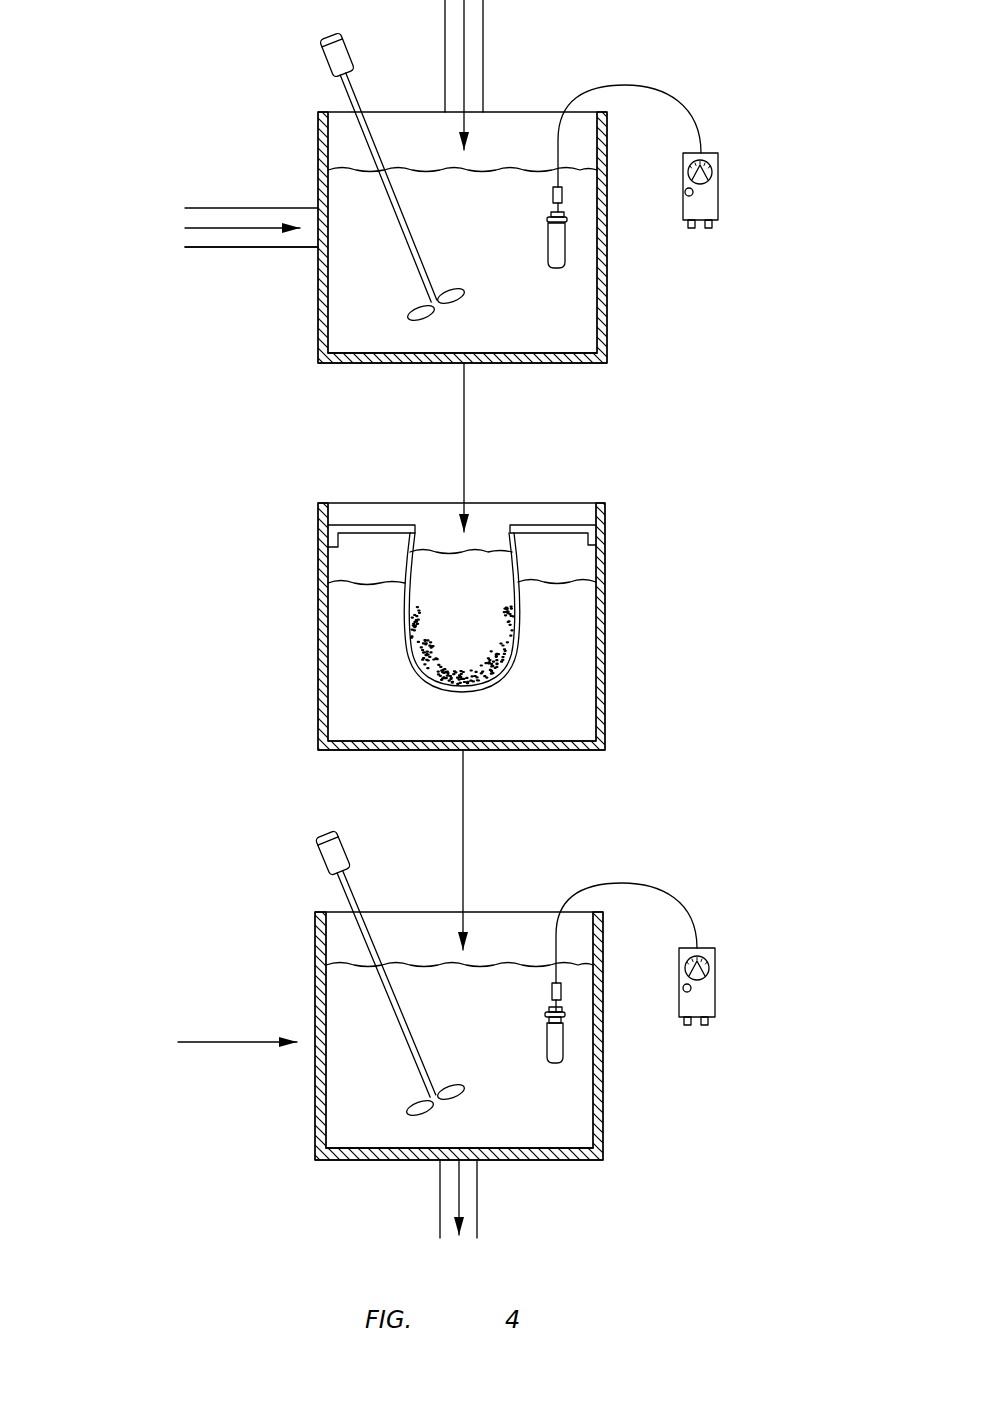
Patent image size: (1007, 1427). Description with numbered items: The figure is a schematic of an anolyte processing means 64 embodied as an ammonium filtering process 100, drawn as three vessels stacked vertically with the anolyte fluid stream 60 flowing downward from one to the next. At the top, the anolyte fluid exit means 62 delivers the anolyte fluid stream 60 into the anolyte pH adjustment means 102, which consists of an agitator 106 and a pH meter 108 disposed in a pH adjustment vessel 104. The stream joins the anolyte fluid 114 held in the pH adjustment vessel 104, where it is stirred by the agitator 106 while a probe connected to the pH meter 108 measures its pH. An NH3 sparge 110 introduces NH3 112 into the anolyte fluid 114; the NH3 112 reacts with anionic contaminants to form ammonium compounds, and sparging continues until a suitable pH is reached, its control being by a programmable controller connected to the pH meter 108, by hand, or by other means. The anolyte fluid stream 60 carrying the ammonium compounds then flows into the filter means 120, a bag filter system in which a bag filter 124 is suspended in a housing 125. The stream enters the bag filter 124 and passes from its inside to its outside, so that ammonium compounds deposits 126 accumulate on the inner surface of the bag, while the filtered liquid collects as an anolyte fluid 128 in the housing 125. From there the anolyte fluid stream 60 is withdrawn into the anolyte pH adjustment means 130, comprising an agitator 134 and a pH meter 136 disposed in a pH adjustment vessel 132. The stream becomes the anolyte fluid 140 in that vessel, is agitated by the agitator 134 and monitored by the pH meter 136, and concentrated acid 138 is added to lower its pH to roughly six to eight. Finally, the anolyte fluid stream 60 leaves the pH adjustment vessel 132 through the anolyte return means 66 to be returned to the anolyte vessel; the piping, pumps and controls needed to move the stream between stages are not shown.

The anolyte fluid stream 60 is at (483, 62).
The anolyte fluid exit means 62 is at (445, 55).
The anolyte processing means 64 is at (518, 619).
The anolyte return means 66 is at (440, 1206).
The ammonium filtering process 100 is at (518, 619).
The anolyte pH adjustment means 102 is at (607, 308).
The pH adjustment vessel 104 is at (607, 345).
The agitator 106 is at (347, 86).
The pH meter 108 is at (718, 182).
The NH3 sparge 110 is at (258, 247).
The NH3 112 is at (250, 228).
The anolyte fluid 114 is at (491, 168).
The filter means 120 is at (607, 517).
The bag filter 124 is at (328, 603).
The housing 125 is at (320, 548).
The ammonium compounds deposits 126 is at (412, 666).
The anolyte fluid 128 is at (350, 583).
The anolyte pH adjustment means 130 is at (603, 1083).
The pH adjustment vessel 132 is at (603, 1145).
The agitator 134 is at (348, 894).
The pH meter 136 is at (715, 988).
The concentrated acid 138 is at (236, 1042).
The anolyte fluid 140 is at (480, 965).